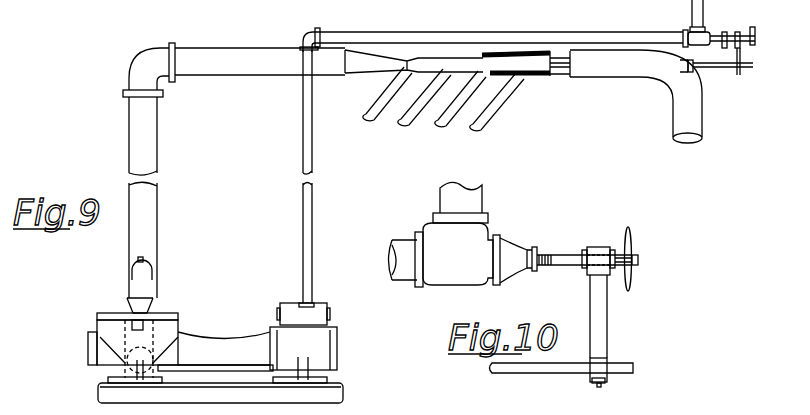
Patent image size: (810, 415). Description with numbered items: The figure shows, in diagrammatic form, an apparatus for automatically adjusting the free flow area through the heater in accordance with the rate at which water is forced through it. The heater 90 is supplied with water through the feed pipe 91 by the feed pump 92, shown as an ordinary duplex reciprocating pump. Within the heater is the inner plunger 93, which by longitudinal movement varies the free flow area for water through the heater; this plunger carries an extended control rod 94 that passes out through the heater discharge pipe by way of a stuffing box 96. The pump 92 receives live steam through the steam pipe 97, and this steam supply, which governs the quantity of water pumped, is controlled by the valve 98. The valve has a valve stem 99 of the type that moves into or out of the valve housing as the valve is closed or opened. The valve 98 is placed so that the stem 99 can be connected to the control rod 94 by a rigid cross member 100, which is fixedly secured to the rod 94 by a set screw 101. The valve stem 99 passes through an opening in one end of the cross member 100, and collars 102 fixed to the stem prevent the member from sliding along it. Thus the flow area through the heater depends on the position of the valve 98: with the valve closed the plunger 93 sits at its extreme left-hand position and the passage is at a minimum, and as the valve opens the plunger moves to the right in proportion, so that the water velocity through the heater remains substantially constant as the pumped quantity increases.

In FIG. 9, the heater 90 is at (367, 70).
In FIG. 9, the feed pipe 91 is at (137, 143).
In FIG. 9, the feed pump 92 is at (232, 345).
In FIG. 9, the inner plunger 93 is at (547, 80).
In FIG. 9, the control rod 94 is at (723, 68).
In FIG. 10, the control rod 94 is at (577, 374).
In FIG. 9, the stuffing box 96 is at (678, 66).
In FIG. 9, the steam pipe 97 is at (692, 12).
In FIG. 10, the steam pipe 97 is at (477, 200).
In FIG. 9, the valve 98 is at (700, 37).
In FIG. 10, the valve 98 is at (448, 272).
In FIG. 10, the valve stem 99 is at (564, 255).
In FIG. 10, the cross member 100 is at (607, 333).
In FIG. 10, the set screw 101 is at (600, 387).
In FIG. 10, the collars 102 is at (586, 248).